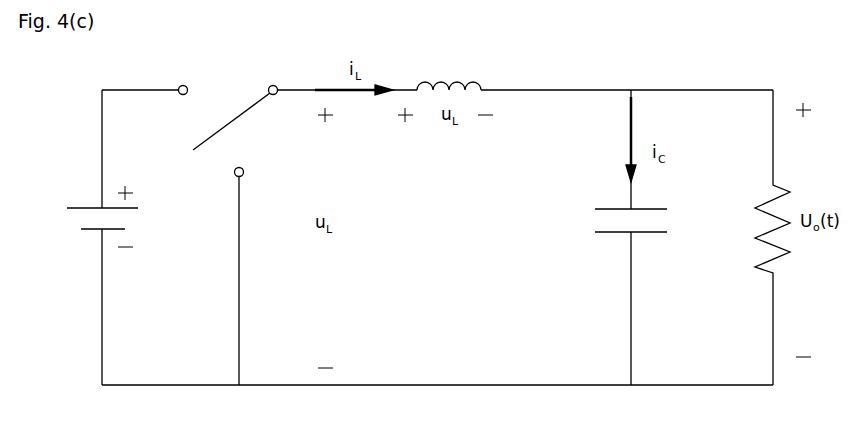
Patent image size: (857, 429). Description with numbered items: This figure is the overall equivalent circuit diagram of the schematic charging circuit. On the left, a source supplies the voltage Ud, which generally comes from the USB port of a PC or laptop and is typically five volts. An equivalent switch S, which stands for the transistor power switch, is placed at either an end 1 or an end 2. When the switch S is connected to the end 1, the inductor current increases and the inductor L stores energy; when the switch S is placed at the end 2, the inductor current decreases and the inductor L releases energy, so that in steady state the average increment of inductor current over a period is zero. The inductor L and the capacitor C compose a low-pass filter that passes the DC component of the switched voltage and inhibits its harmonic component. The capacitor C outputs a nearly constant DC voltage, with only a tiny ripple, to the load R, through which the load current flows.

The end 1 is at (175, 79).
The end 2 is at (228, 277).
The equivalent switch S is at (235, 118).
The inductor L is at (443, 71).
The capacitor C is at (566, 237).
The load R is at (736, 237).
The voltage supplied by an external charging source Ud is at (86, 237).